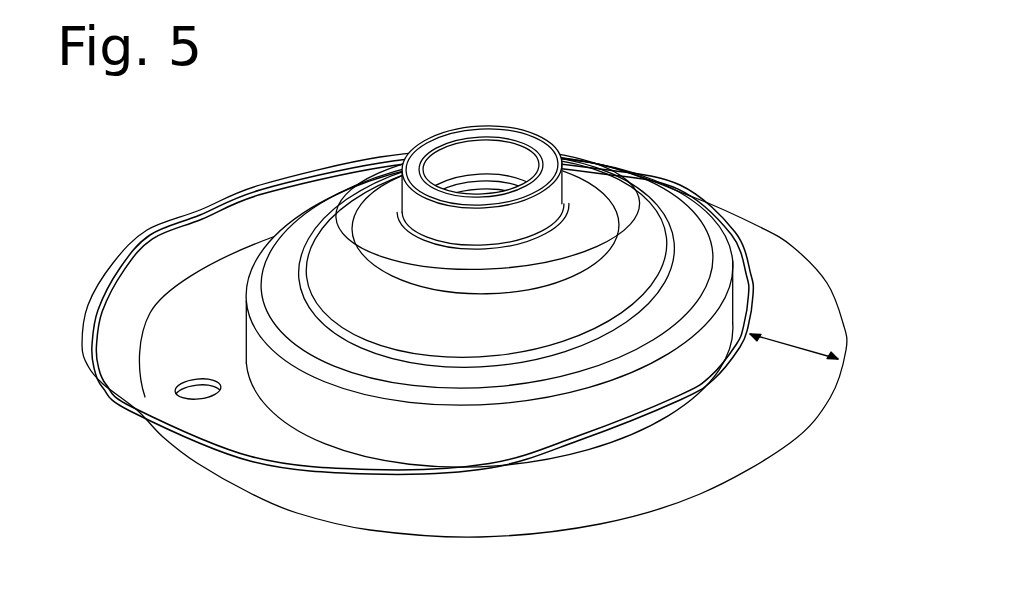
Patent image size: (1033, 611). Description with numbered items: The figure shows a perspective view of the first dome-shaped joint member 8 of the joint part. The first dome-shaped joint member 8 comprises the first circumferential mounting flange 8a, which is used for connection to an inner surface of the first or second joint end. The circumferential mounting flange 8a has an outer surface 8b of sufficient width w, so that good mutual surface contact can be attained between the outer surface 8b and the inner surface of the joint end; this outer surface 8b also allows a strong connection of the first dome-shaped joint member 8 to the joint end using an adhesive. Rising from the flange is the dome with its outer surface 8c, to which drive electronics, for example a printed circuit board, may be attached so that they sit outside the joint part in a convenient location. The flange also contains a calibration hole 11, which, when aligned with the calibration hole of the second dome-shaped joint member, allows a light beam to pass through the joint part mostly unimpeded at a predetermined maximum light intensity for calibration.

The first dome-shaped joint member 8 is at (333, 260).
The first circumferential mounting flange 8a is at (718, 482).
The outer surface 8b is at (786, 294).
The outer surface 8c is at (638, 262).
The calibration hole 11 is at (200, 389).